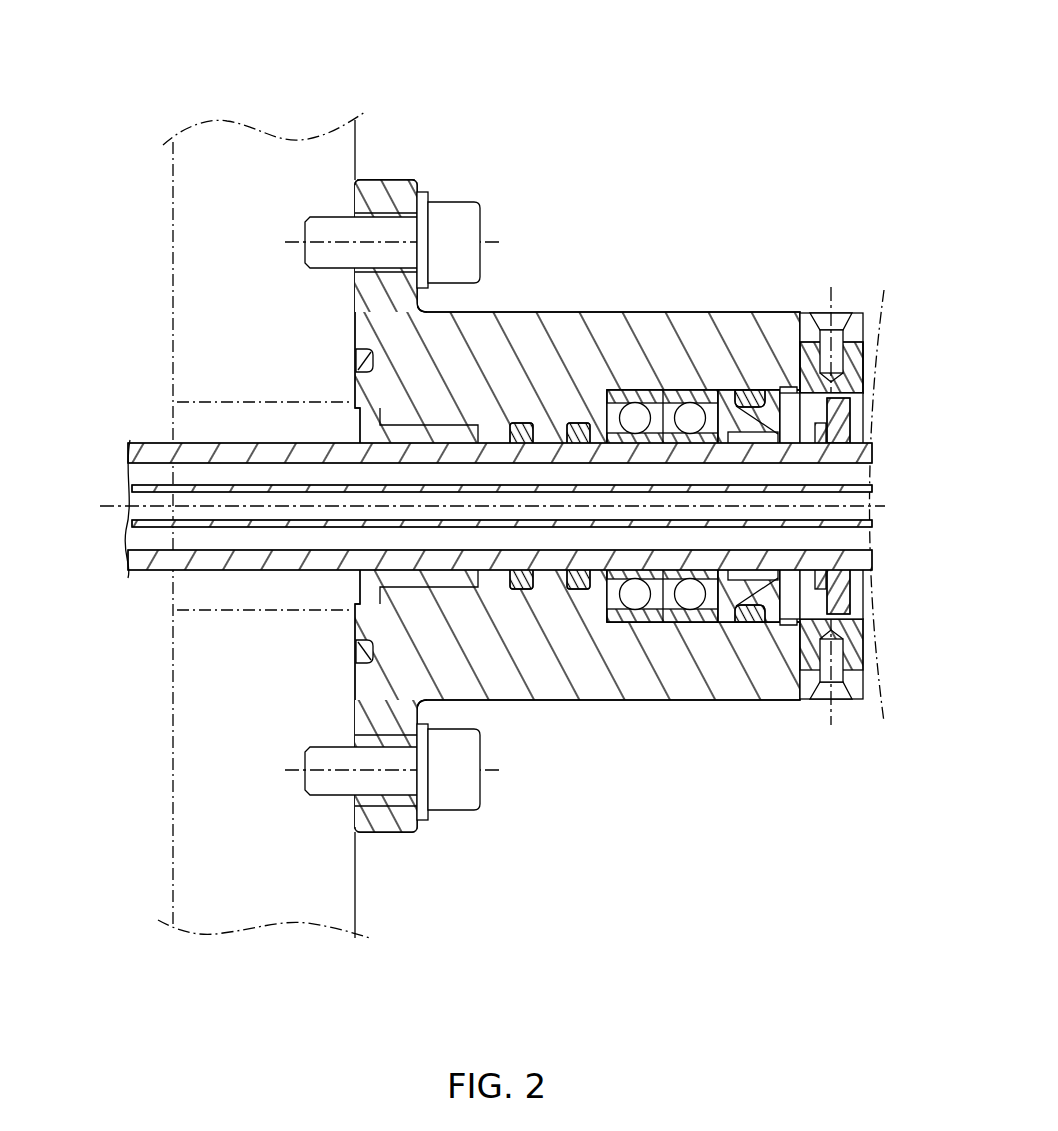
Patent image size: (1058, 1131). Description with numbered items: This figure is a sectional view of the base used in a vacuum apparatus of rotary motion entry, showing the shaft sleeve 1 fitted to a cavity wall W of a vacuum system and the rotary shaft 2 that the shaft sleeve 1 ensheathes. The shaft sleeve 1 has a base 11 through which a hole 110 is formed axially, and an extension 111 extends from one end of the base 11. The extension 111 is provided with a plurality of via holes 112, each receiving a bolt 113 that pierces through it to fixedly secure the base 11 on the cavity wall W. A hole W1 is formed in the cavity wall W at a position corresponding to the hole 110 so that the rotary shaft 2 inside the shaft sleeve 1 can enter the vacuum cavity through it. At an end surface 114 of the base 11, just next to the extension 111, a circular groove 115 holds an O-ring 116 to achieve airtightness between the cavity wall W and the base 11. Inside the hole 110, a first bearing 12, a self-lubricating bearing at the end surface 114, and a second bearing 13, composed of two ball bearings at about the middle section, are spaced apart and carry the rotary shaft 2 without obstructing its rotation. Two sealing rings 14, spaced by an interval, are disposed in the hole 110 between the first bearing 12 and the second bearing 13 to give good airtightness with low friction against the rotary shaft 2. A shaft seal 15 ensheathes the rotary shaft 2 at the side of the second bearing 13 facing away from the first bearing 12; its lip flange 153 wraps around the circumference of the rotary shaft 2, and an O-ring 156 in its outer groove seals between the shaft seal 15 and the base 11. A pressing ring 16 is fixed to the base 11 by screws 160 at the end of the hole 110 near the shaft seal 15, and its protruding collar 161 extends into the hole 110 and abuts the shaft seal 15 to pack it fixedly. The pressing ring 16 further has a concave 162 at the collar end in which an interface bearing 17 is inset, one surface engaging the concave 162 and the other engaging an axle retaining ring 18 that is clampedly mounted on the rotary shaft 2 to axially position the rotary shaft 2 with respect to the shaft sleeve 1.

The shaft sleeve 1 is at (640, 170).
The rotary shaft 2 is at (147, 572).
The base 11 is at (620, 312).
The first bearing 12 is at (440, 430).
The second bearing 13 is at (633, 625).
The sealing ring 14 is at (578, 424).
The shaft seal 15 is at (733, 392).
The pressing ring 16 is at (863, 314).
The interface bearing 17 is at (848, 437).
The axle retaining ring 18 is at (857, 358).
The hole 110 is at (548, 580).
The extension 111 is at (392, 185).
The via hole 112 is at (353, 242).
The bolt 113 is at (472, 213).
The end surface 114 is at (355, 734).
The circular groove 115 is at (358, 651).
The O-ring 116 is at (355, 358).
The lip flange 153 is at (758, 392).
The O-ring 156 is at (742, 620).
The screw 160 is at (812, 316).
The protruding collar 161 is at (800, 615).
The concave 162 is at (838, 600).
The cavity wall W is at (173, 187).
The hole W1 is at (200, 402).